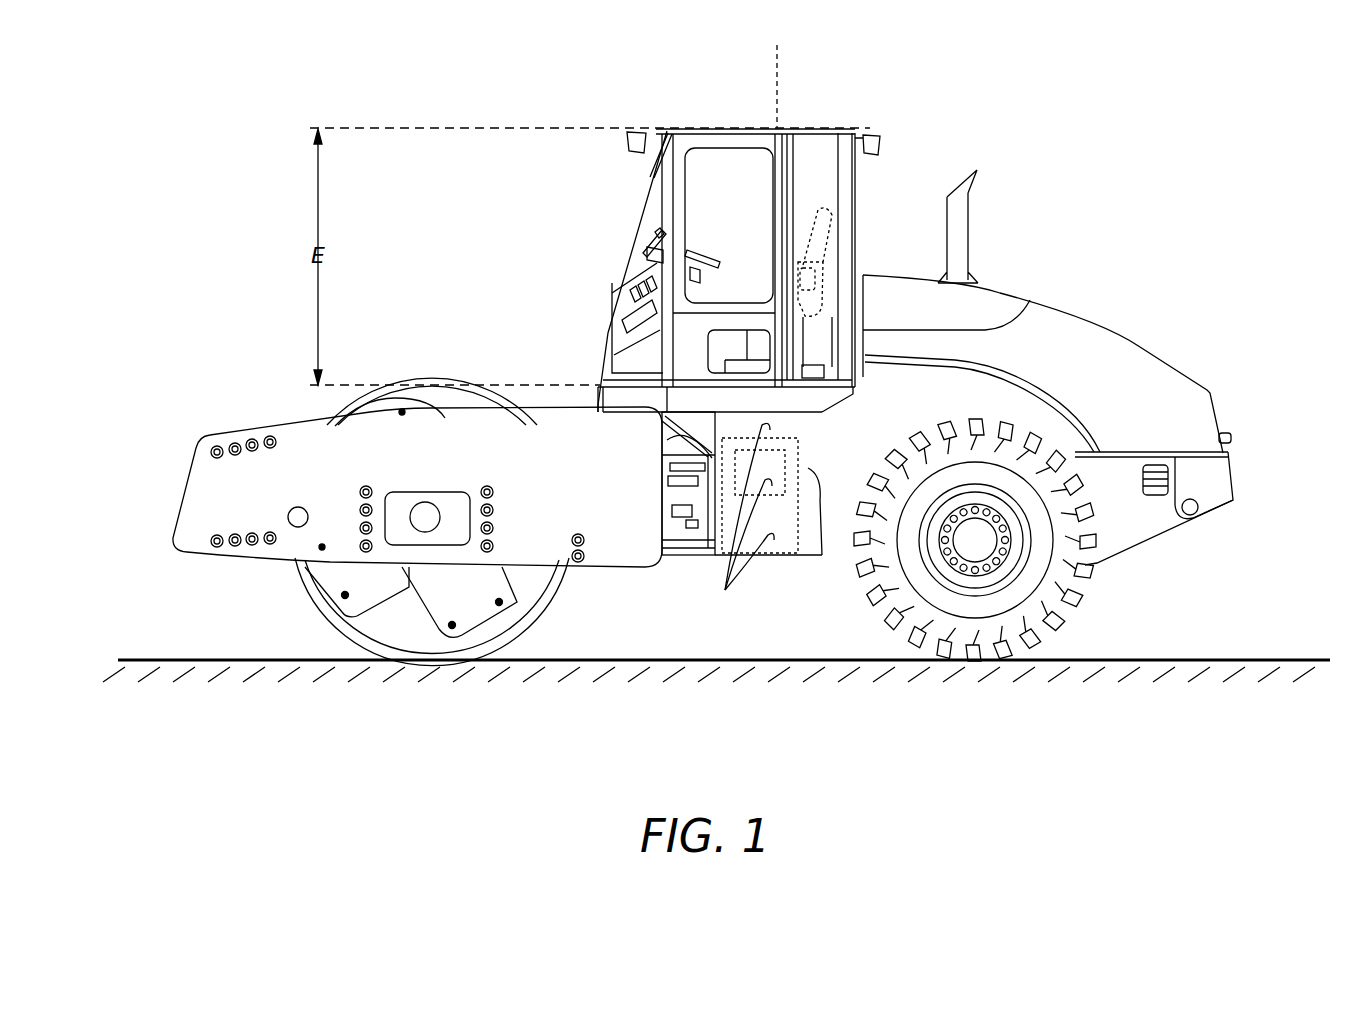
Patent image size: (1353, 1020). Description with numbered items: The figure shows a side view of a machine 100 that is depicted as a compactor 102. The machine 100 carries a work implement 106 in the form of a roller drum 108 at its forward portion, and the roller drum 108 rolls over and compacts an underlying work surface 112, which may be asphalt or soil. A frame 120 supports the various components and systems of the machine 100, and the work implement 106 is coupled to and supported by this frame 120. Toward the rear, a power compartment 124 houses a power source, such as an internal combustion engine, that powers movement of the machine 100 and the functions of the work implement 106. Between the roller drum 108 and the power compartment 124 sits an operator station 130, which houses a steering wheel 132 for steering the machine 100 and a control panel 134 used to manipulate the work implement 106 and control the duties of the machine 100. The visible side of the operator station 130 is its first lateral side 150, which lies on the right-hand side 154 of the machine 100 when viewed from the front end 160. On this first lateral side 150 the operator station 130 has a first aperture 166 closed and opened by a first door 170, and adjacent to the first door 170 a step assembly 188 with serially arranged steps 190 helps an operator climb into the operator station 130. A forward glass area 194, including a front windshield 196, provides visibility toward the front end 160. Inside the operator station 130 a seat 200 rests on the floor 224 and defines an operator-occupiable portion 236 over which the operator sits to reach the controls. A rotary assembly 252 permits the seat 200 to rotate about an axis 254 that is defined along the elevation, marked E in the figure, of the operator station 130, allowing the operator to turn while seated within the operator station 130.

The machine 100 is at (172, 118).
The compactor 102 is at (247, 195).
The work implement 106 is at (320, 603).
The roller drum 108 is at (302, 577).
The work surface 112 is at (1200, 660).
The frame 120 is at (605, 568).
The power compartment 124 is at (1127, 340).
The operator station 130 is at (842, 129).
The steering wheel 132 is at (655, 236).
The control panel 134 is at (647, 256).
The first lateral side 150 is at (655, 131).
The right-hand side 154 is at (1072, 344).
The front end 160 is at (200, 470).
The first aperture 166 is at (678, 185).
The first door 170 is at (706, 172).
The step assembly 188 is at (793, 468).
The steps 190 is at (739, 523).
The forward glass area 194 is at (600, 290).
The front windshield 196 is at (606, 266).
The seat 200 is at (838, 222).
The floor 224 is at (1015, 318).
The operator-occupiable portion 236 is at (803, 228).
The rotary assembly 252 is at (805, 350).
The axis 254 is at (778, 52).